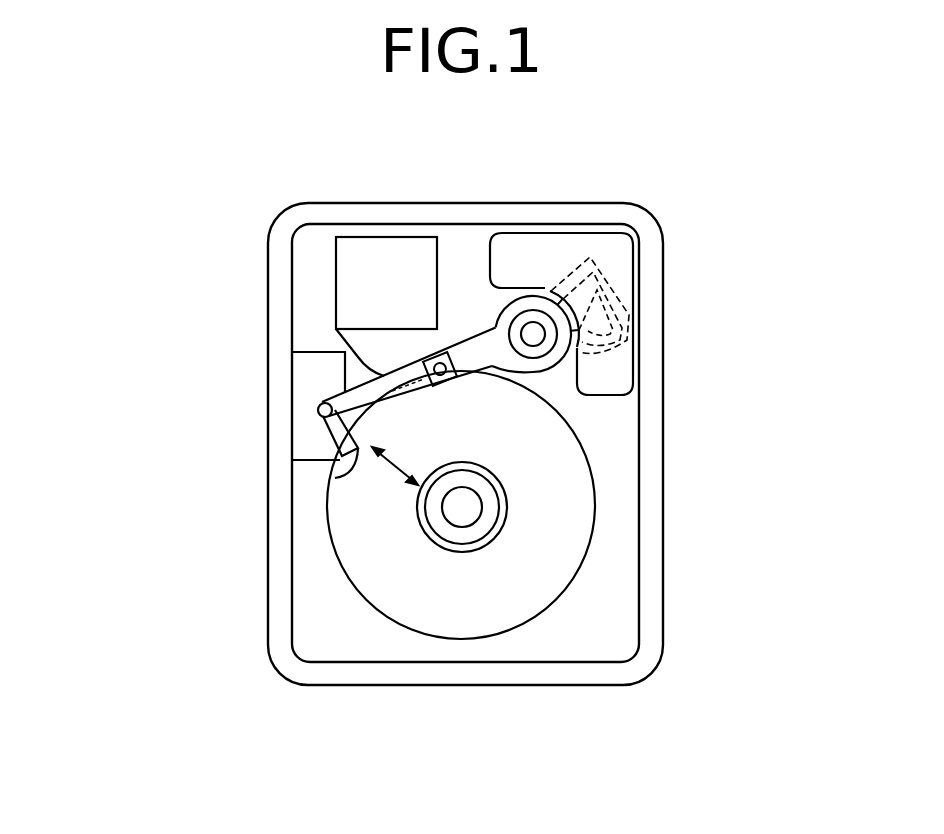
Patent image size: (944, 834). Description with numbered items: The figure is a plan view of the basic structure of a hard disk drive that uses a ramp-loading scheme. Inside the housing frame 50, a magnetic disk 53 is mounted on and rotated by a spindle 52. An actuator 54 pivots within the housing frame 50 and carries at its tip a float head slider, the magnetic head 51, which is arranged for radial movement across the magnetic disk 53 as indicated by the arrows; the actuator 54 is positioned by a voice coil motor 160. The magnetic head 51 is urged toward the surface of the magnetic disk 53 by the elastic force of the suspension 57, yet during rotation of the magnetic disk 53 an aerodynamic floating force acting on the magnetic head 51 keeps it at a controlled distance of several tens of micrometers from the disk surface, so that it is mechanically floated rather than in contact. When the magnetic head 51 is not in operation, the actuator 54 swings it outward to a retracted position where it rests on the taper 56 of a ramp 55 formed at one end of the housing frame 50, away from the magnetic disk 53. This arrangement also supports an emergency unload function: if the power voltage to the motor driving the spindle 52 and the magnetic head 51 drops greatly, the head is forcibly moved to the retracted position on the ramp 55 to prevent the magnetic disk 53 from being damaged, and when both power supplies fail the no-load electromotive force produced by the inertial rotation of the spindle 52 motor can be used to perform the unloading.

The housing frame 50 is at (521, 686).
The magnetic head 51 is at (318, 406).
The spindle 52 is at (498, 499).
The magnetic disk 53 is at (587, 560).
The actuator 54 is at (481, 333).
The ramp 55 is at (302, 438).
The taper 56 is at (340, 478).
The suspension 57 is at (373, 402).
The voice coil motor 160 is at (617, 282).